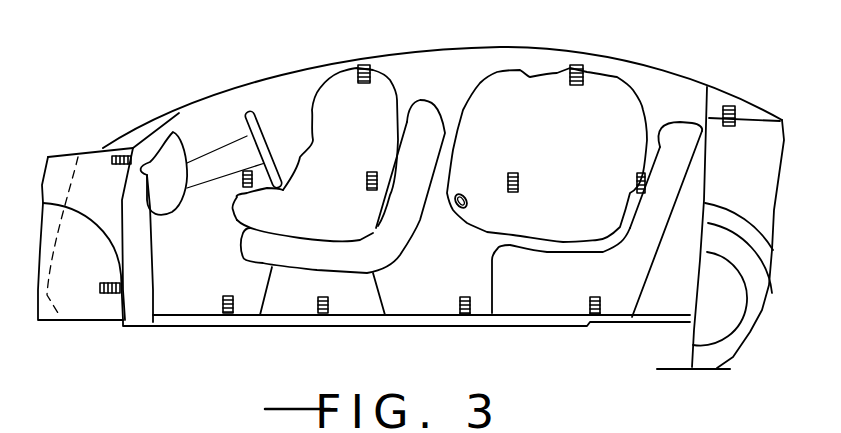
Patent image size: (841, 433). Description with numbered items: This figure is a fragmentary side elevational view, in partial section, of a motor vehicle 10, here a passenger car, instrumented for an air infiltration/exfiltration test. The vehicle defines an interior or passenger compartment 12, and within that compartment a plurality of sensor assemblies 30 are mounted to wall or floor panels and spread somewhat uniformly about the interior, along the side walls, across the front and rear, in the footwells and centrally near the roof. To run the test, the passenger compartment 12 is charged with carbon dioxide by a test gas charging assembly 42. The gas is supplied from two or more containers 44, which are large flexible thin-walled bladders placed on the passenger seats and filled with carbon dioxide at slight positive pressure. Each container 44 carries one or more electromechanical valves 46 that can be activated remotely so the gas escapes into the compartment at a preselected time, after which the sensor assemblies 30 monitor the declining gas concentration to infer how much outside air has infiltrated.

The motor vehicle 10 is at (720, 76).
The passenger compartment 12 is at (452, 88).
The sensor assemblies 30 is at (223, 190).
The test gas charging assembly 42 is at (325, 100).
The containers 44 is at (512, 260).
The electromechanical valves 46 is at (461, 195).